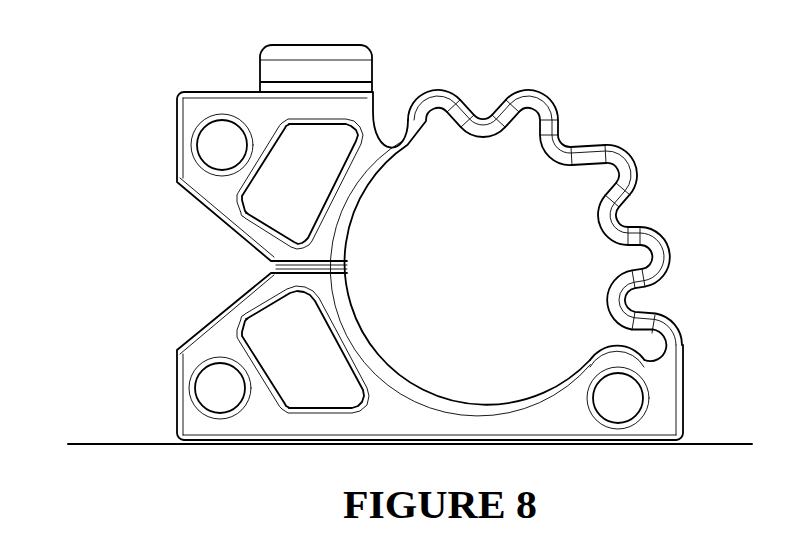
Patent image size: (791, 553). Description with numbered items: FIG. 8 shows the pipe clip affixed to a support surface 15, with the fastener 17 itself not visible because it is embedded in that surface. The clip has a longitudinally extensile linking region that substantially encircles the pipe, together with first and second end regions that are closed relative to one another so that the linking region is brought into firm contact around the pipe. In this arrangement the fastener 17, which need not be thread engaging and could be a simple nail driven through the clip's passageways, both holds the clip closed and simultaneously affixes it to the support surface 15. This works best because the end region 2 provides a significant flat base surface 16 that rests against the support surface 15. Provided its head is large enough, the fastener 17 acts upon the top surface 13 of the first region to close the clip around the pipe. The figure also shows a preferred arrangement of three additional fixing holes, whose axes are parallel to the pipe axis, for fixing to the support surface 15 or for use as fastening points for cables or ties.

The second end region 2 is at (167, 357).
The top surface 13 is at (195, 82).
The support surface 15 is at (102, 440).
The flat base surface 16 is at (648, 447).
The fastener 17 is at (380, 58).